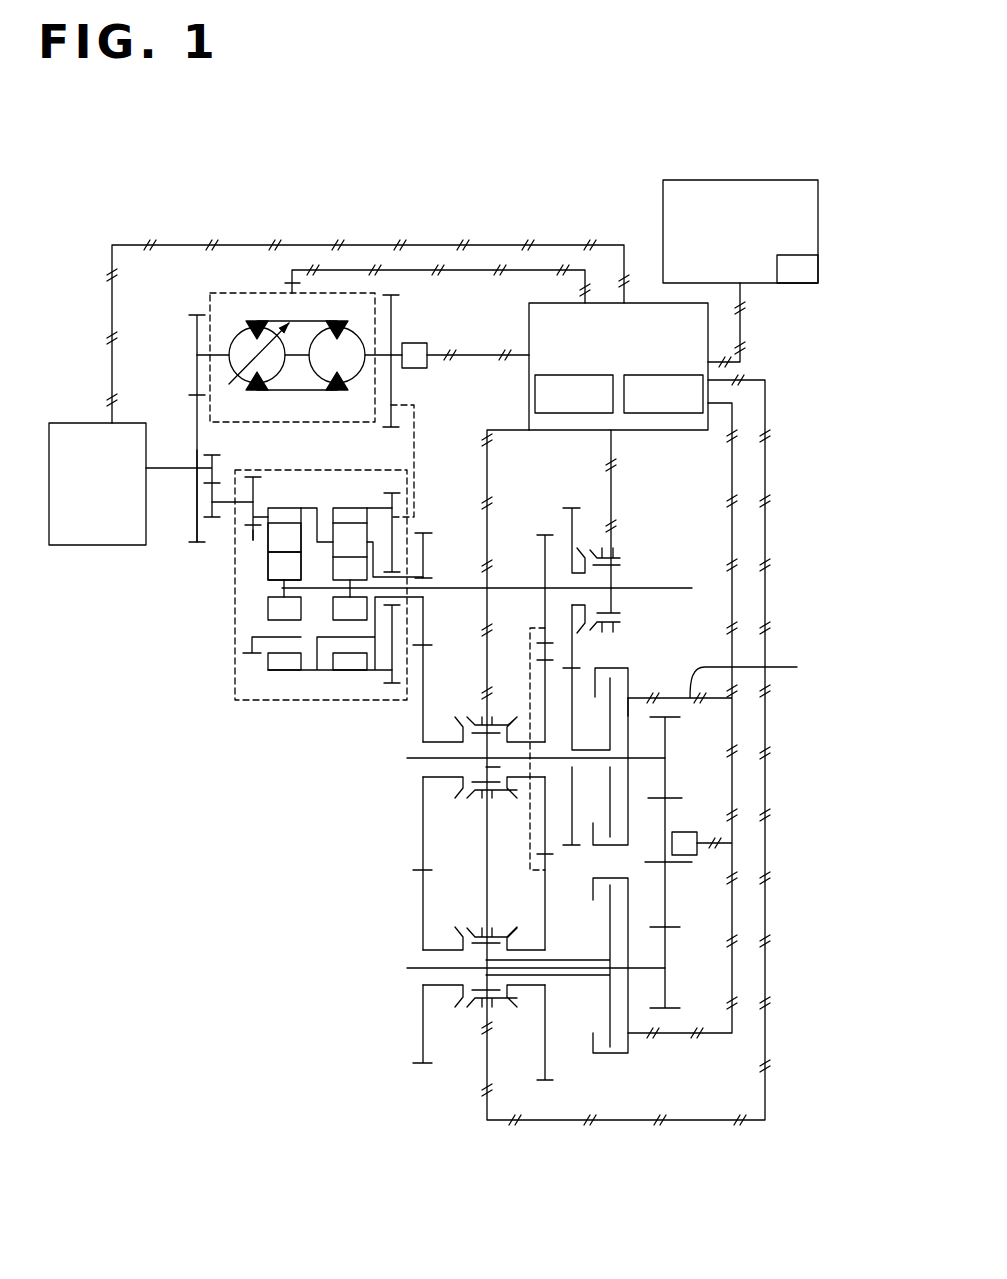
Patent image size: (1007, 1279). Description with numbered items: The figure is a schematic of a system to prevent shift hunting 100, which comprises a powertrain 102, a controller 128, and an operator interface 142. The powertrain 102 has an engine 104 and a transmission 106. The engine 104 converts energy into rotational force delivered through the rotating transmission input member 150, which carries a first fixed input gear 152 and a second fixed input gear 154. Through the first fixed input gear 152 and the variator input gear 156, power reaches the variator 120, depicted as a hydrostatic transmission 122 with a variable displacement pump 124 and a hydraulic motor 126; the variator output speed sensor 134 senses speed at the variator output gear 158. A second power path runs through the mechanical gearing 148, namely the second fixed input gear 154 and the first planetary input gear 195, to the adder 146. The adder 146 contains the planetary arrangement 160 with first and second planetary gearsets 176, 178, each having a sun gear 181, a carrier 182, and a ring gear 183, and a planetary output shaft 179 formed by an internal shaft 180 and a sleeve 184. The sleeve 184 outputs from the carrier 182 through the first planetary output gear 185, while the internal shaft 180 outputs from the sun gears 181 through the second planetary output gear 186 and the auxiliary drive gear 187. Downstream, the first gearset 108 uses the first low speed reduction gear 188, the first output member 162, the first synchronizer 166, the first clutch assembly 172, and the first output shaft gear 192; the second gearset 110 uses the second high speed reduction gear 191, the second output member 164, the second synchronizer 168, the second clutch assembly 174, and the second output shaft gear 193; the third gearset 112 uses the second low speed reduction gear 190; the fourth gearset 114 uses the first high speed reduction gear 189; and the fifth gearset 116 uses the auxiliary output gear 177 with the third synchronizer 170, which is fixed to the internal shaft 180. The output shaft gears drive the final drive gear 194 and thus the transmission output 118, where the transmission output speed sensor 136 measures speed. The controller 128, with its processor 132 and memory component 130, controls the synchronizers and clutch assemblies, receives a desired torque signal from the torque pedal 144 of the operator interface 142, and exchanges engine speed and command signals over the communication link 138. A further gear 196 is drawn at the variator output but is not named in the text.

The system to prevent shift hunting 100 is at (542, 162).
The powertrain 102 is at (206, 732).
The engine 104 is at (83, 520).
The transmission 106 is at (378, 744).
The first gearset 108 is at (447, 655).
The second gearset 110 is at (558, 887).
The third gearset 112 is at (447, 880).
The fourth gearset 114 is at (526, 656).
The fifth gearset 116 is at (590, 655).
The transmission output 118 is at (680, 862).
The variator 120 is at (209, 296).
The hydrostatic transmission 122 is at (262, 320).
The variable displacement pump 124 is at (237, 382).
The hydraulic motor 126 is at (351, 383).
The controller 128 is at (539, 332).
The memory component 130 is at (550, 375).
The processor 132 is at (634, 375).
The variator output speed sensor 134 is at (415, 343).
The transmission output speed sensor 136 is at (685, 832).
The communication link 138 is at (527, 350).
The operator interface 142 is at (752, 180).
The torque pedal 144 is at (777, 272).
The adder 146 is at (235, 680).
The mechanical gearing 148 is at (205, 598).
The transmission input member 150 is at (212, 456).
The first fixed input gear 152 is at (197, 490).
The second fixed input gear 154 is at (218, 477).
The variator input gear 156 is at (196, 330).
The variator output gear 158 is at (393, 307).
The planetary arrangement 160 is at (315, 505).
The first output member 162 is at (407, 760).
The second output member 164 is at (407, 968).
The first synchronizer 166 is at (486, 798).
The second synchronizer 168 is at (482, 1008).
The third synchronizer 170 is at (612, 575).
The first clutch assembly 172 is at (630, 707).
The second clutch assembly 174 is at (643, 895).
The first planetary gearset 176 is at (284, 673).
The auxiliary output gear 177 is at (573, 748).
The second planetary gearset 178 is at (351, 673).
The planetary output shaft 179 is at (519, 498).
The internal shaft 180 is at (502, 588).
The sun gear 181 is at (274, 580).
The carrier 182 is at (274, 551).
The ring gear 183 is at (260, 515).
The sleeve 184 is at (424, 582).
The first planetary output gear 185 is at (428, 534).
The second planetary output gear 186 is at (545, 535).
The auxiliary drive gear 187 is at (572, 522).
The first low speed reduction gear 188 is at (424, 712).
The first high speed reduction gear 189 is at (547, 693).
The second low speed reduction gear 190 is at (423, 912).
The second high speed reduction gear 191 is at (548, 1020).
The first output shaft gear 192 is at (667, 722).
The second output shaft gear 193 is at (666, 1004).
The final drive gear 194 is at (668, 927).
The first planetary input gear 195 is at (253, 548).
The gear 196 is at (392, 497).